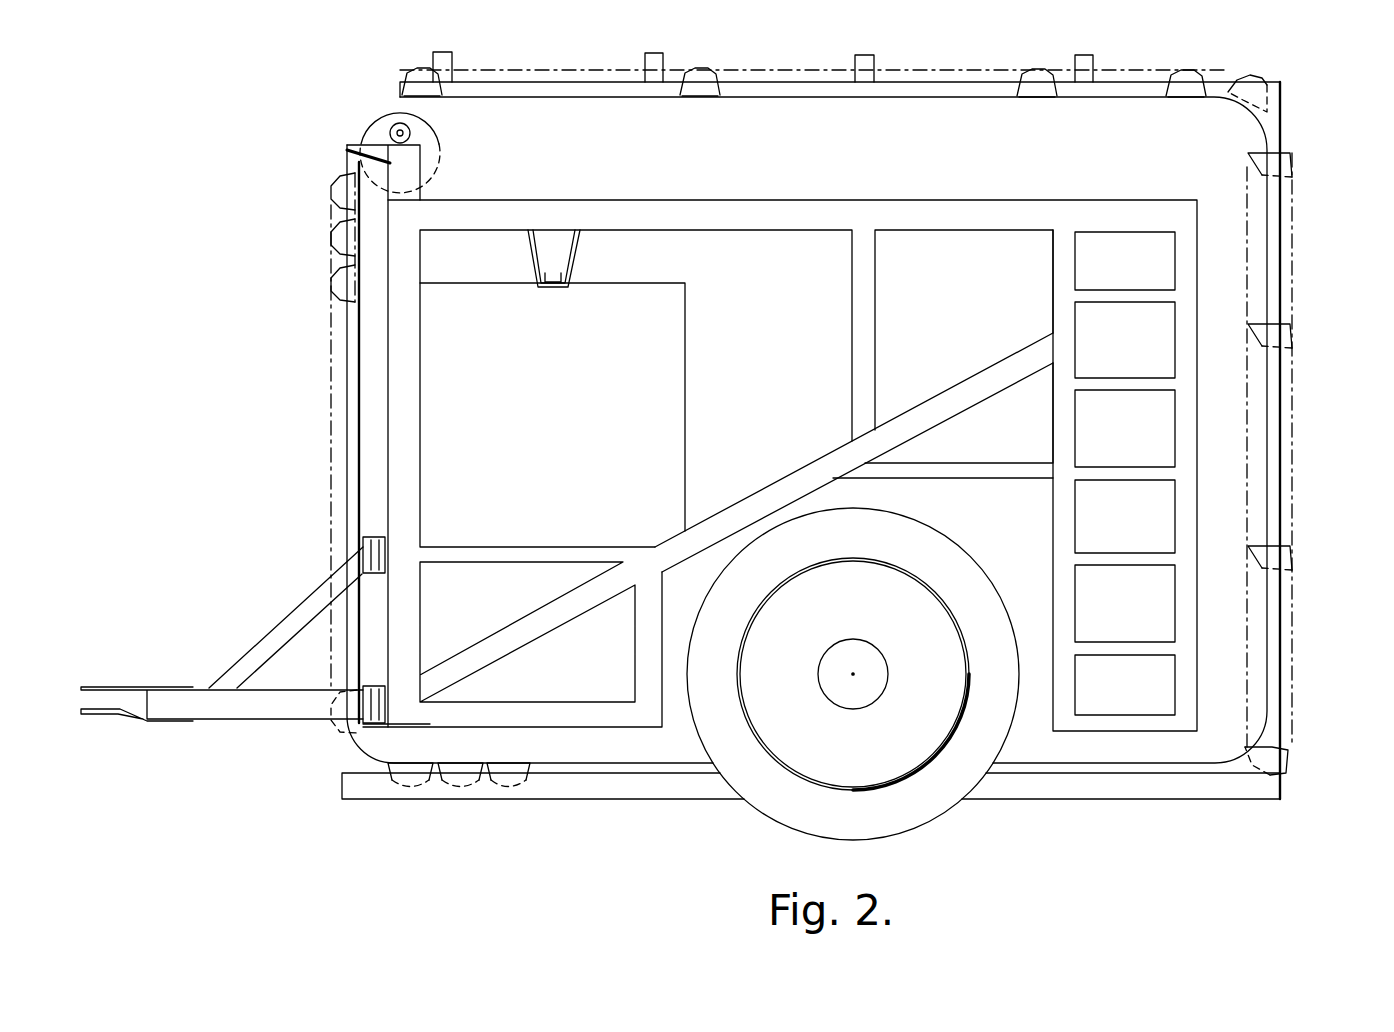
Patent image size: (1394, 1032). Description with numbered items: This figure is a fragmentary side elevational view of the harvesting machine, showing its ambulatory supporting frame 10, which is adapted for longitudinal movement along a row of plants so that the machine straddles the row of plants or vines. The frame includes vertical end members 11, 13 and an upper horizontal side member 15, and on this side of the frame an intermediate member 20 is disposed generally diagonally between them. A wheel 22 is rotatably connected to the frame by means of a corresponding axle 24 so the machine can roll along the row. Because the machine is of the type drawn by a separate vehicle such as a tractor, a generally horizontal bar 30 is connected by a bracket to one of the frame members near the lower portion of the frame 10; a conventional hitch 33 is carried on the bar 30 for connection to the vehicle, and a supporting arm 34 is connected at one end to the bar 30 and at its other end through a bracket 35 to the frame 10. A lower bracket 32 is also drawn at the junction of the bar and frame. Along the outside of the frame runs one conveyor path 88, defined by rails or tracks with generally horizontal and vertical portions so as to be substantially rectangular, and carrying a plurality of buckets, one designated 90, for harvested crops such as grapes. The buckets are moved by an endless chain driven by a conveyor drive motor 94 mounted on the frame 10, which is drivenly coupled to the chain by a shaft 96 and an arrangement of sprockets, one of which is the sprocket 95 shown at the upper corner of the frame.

The supporting frame 10 is at (388, 388).
The vertical end member 11 is at (400, 428).
The vertical end member 13 is at (1187, 422).
The upper horizontal side member 15 is at (840, 200).
The intermediate member 20 is at (828, 470).
The wheel 22 is at (910, 815).
The axle 24 is at (860, 653).
The horizontal bar 30 is at (246, 704).
The lower bracket 32 is at (372, 712).
The hitch 33 is at (105, 717).
The supporting arm 34 is at (300, 615).
The bracket 35 is at (360, 551).
The conveyor path 88 is at (518, 68).
The bucket 90 is at (708, 65).
The conveyor drive motor 94 is at (396, 128).
The sprocket 95 is at (443, 128).
The shaft 96 is at (392, 130).